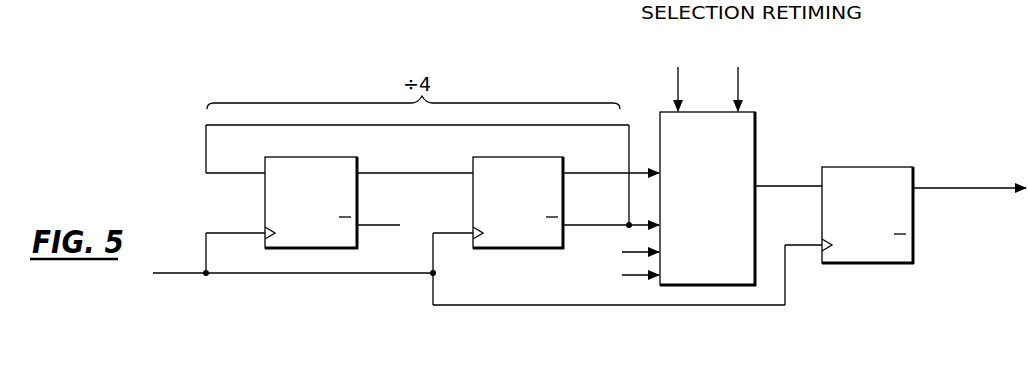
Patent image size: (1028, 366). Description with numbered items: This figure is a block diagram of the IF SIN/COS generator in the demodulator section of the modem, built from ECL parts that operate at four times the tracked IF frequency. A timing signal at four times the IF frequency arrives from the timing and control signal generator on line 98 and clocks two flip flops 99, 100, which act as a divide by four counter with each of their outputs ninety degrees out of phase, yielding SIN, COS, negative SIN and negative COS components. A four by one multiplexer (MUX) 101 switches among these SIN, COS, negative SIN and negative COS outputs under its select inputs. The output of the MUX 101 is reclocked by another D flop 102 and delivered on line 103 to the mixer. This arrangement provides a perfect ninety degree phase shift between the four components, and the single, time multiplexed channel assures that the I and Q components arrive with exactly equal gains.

The line carrying 4 IF timing signal 98 is at (190, 272).
The flip flop 99 is at (355, 157).
The flip flop 100 is at (558, 157).
The 4×1 multiplexer (MUX) 101 is at (757, 130).
The D flop 102 is at (906, 167).
The output line to mixer 103 is at (981, 190).